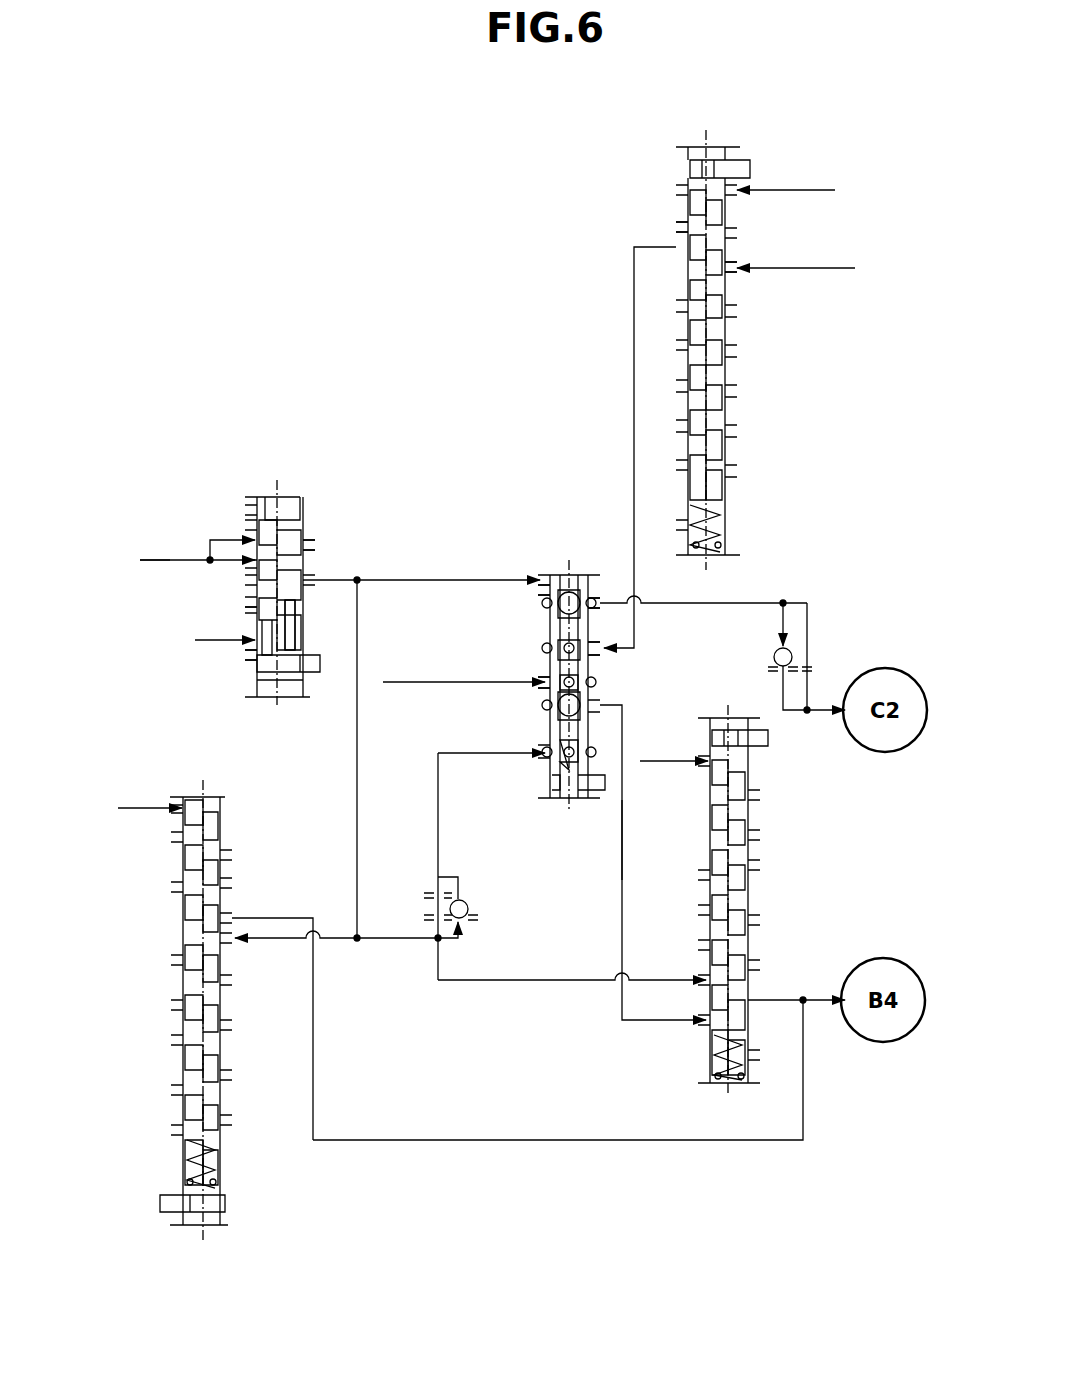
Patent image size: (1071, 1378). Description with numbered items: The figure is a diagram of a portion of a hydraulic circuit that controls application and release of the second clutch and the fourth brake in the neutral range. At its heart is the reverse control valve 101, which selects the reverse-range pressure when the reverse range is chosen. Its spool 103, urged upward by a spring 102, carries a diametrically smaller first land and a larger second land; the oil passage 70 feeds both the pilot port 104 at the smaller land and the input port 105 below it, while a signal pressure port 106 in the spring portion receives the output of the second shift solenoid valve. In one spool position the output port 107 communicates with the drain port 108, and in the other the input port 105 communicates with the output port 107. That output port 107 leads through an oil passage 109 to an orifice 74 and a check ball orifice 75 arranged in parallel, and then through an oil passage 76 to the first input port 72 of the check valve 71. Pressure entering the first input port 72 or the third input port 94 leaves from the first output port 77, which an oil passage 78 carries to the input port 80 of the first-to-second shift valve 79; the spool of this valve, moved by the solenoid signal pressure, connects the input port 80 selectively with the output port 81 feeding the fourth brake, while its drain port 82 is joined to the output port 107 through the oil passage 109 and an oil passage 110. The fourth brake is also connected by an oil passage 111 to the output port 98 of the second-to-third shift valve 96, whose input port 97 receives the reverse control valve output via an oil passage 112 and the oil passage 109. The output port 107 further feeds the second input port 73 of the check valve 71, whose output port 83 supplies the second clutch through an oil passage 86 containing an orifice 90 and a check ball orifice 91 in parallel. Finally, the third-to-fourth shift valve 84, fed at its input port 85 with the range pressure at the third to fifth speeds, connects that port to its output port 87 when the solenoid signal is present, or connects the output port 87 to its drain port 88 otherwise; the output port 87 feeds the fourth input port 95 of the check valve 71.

The oil passage 70 is at (150, 563).
The check valve 71 is at (532, 522).
The first input port 72 is at (530, 748).
The second input port 73 is at (535, 575).
The orifice 74 is at (428, 917).
The check ball orifice 75 is at (470, 905).
The oil passage 76 is at (440, 832).
The first output port 77 is at (605, 705).
The oil passage 78 is at (624, 840).
The 1-2 shift valve 79 is at (648, 1082).
The input port 80 is at (695, 1028).
The output port 81 is at (762, 997).
The drain port 82 is at (692, 975).
The output port 83 is at (598, 600).
The 3-4 shift valve 84 is at (638, 186).
The input port 85 is at (738, 272).
The oil passage 86 is at (748, 600).
The output port 87 is at (668, 243).
The drain port 88 is at (676, 227).
The orifice 90 is at (812, 660).
The check ball orifice 91 is at (800, 640).
The third input port 94 is at (540, 680).
The fourth input port 95 is at (605, 648).
The 2-3 shift valve 96 is at (248, 1170).
The input port 97 is at (235, 944).
The output port 98 is at (244, 916).
The reverse control valve 101 is at (322, 480).
The spring 102 is at (297, 640).
The spool 103 is at (305, 550).
The pilot port 104 is at (255, 525).
The input port 105 is at (250, 563).
The signal pressure port 106 is at (245, 650).
The output port 107 is at (312, 578).
The drain port 108 is at (250, 607).
The oil passage 109 is at (355, 778).
The oil passage 110 is at (518, 982).
The oil passage 111 is at (492, 1140).
The oil passage 112 is at (328, 940).